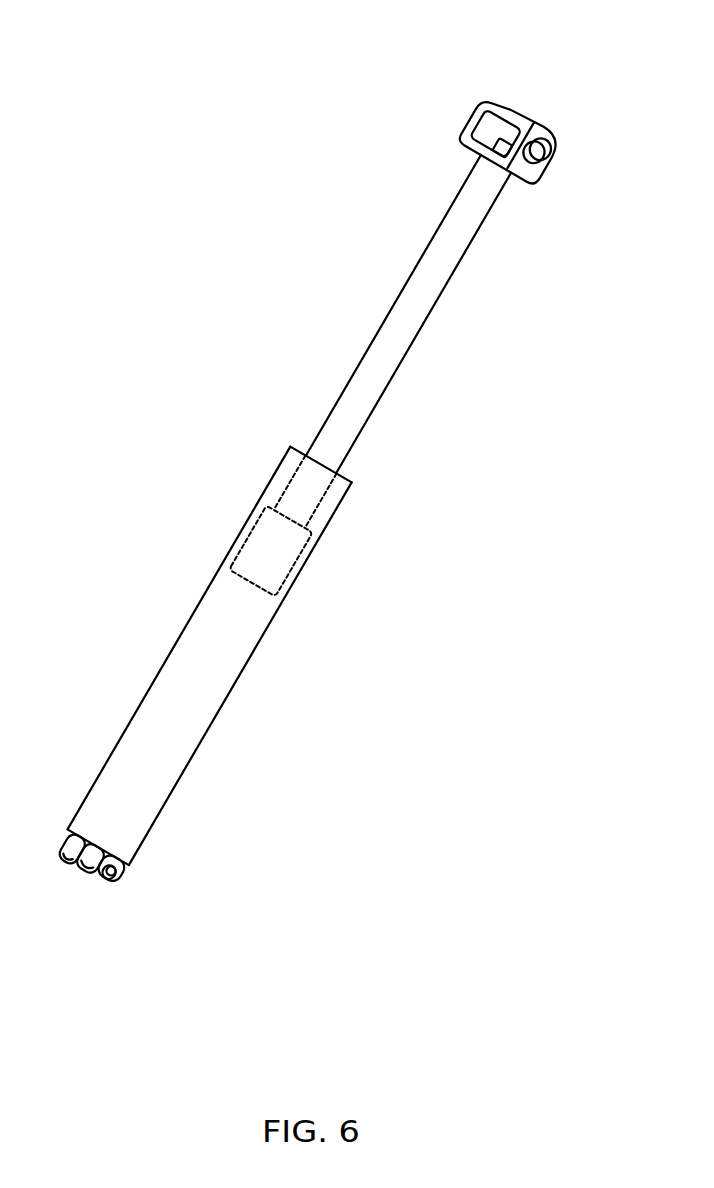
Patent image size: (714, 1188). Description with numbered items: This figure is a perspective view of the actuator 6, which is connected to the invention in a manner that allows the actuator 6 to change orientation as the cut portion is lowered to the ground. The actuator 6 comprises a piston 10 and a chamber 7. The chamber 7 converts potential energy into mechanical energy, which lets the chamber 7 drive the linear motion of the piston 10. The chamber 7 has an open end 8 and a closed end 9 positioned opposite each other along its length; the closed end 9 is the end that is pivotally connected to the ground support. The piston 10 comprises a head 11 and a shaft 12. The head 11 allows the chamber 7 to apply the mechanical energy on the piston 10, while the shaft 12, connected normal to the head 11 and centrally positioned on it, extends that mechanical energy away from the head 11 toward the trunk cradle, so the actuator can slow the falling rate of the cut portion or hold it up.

The actuator 6 is at (553, 81).
The chamber 7 is at (158, 656).
The open end 8 is at (298, 446).
The closed end 9 is at (120, 868).
The piston 10 is at (384, 308).
The head 11 is at (283, 562).
The shaft 12 is at (473, 205).